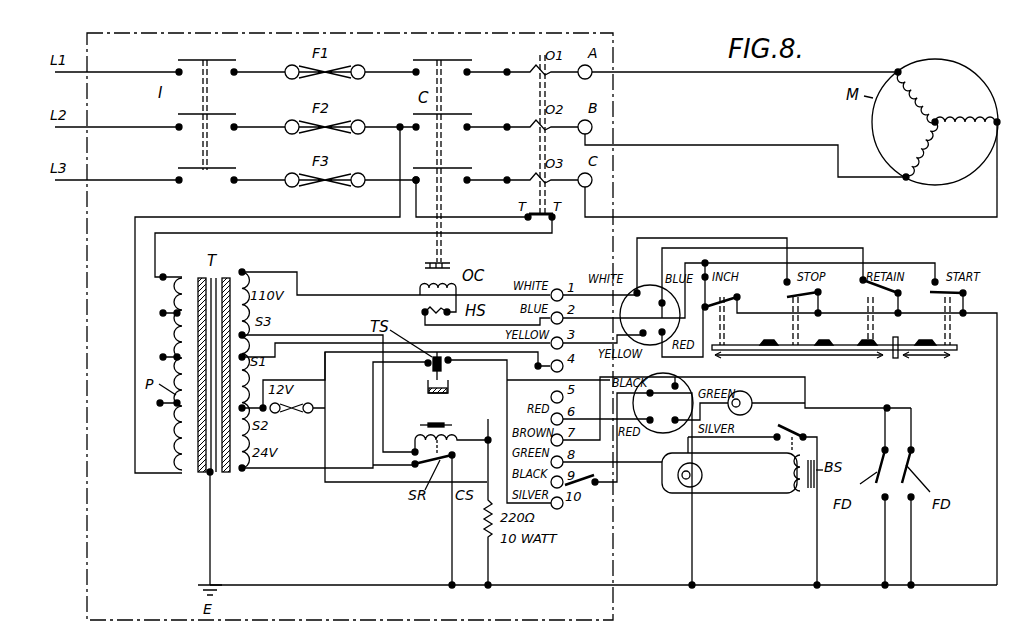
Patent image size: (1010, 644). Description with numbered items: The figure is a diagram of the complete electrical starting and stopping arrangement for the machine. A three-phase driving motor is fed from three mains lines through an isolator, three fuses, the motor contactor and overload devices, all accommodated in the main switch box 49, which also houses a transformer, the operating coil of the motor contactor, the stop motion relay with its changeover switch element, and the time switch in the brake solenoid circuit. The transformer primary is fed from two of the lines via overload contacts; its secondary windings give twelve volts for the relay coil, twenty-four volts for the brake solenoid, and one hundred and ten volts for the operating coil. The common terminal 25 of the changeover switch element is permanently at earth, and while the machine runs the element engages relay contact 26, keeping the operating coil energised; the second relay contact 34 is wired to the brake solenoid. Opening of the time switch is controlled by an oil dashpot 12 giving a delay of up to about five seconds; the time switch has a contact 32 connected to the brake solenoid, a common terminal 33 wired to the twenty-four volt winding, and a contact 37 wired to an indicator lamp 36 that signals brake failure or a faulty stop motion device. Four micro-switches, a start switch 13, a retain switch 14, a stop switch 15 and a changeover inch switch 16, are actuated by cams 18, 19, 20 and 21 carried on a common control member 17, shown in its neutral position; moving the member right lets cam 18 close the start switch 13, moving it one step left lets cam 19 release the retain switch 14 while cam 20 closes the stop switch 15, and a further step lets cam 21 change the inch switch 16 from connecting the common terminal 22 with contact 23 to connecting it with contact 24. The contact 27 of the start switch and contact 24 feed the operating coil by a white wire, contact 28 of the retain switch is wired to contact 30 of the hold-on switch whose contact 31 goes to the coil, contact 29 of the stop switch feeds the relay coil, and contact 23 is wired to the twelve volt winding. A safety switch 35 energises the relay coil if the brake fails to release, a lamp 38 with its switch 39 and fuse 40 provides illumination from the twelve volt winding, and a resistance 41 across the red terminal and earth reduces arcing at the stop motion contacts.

The oil dashpot 12 is at (446, 386).
The start switch 13 is at (963, 293).
The retain switch 14 is at (893, 298).
The stop switch 15 is at (818, 293).
The changeover inch switch 16 is at (727, 292).
The common control member 17 is at (944, 346).
The cam 18 is at (925, 340).
The cam 19 is at (870, 340).
The cam 20 is at (823, 340).
The cam 21 is at (769, 340).
The common terminal 22 is at (747, 302).
The contact 23 is at (708, 309).
The contact 24 is at (704, 288).
The common terminal 25 is at (453, 458).
The relay contact 26 is at (414, 455).
The contact 27 is at (932, 282).
The contact 28 is at (866, 278).
The contact 29 is at (775, 279).
The contact 30 is at (473, 321).
The contact 31 is at (428, 308).
The contact 32 is at (450, 359).
The common terminal 33 is at (428, 364).
The second relay contact 34 is at (412, 466).
The safety switch 35 is at (800, 424).
The indicator lamp 36 is at (755, 404).
The contact 37 is at (440, 357).
The lamp 38 is at (703, 476).
The switch 39 is at (580, 486).
The fuse 40 is at (297, 417).
The resistance 41 is at (480, 517).
The main switch box 49 is at (87, 367).